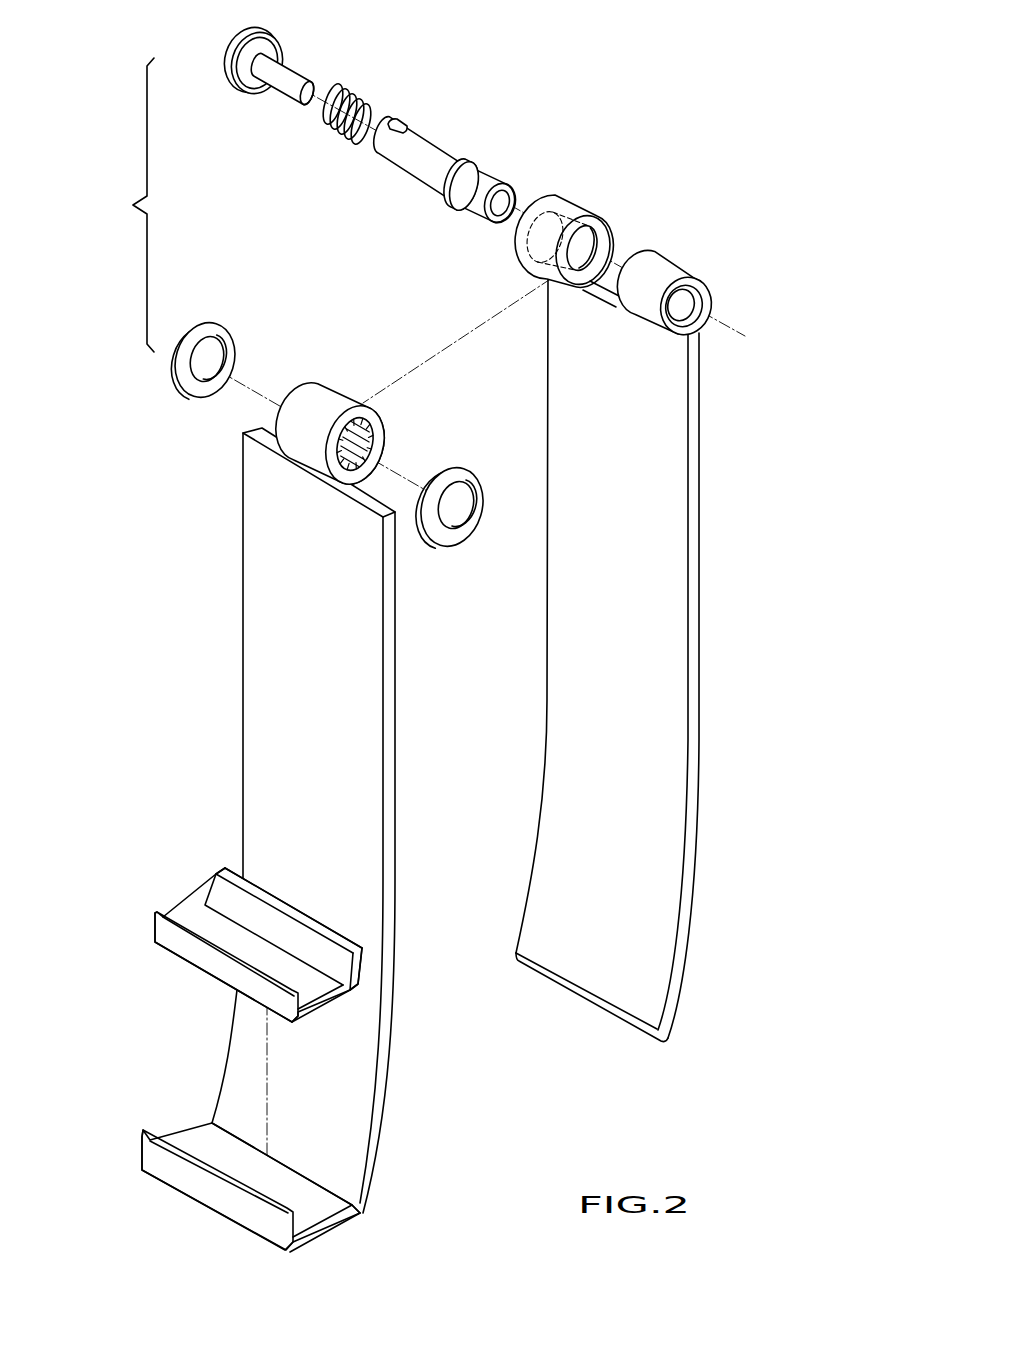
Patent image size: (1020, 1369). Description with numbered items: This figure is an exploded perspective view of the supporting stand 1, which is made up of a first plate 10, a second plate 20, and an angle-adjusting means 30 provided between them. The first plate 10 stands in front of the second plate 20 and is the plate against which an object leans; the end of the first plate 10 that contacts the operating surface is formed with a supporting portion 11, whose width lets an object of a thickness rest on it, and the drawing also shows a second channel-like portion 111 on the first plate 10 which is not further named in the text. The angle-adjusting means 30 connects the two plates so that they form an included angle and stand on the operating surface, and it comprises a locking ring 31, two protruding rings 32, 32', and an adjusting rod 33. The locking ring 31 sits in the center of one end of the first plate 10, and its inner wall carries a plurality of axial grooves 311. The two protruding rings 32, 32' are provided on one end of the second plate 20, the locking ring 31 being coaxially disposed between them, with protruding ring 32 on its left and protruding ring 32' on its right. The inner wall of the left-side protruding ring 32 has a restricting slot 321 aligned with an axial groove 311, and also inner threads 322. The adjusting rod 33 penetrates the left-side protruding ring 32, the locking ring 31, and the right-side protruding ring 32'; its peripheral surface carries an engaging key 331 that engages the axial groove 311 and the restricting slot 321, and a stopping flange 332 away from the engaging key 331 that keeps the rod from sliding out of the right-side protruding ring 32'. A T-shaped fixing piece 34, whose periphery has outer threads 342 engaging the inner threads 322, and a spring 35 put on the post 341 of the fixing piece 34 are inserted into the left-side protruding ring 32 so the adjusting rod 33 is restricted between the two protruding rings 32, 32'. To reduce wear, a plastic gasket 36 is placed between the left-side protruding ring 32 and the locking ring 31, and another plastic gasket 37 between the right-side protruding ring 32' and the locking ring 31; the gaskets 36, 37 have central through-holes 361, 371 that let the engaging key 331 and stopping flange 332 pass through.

The supporting stand 1 is at (728, 138).
The first plate 10 is at (275, 647).
The supporting portion 11 is at (202, 1142).
The upper channel 111 is at (202, 922).
The second plate 20 is at (660, 695).
The angle-adjusting means 30 is at (125, 205).
The locking ring 31 is at (334, 397).
The axial grooves 311 is at (378, 437).
The protruding ring 32 is at (568, 222).
The restricting slot 321 is at (584, 232).
The inner threads 322 is at (517, 240).
The protruding ring 32' is at (678, 266).
The adjusting rod 33 is at (436, 150).
The engaging key 331 is at (403, 120).
The stopping flange 332 is at (477, 170).
The T-shaped fixing piece 34 is at (244, 48).
The post 341 is at (293, 90).
The outer threads 342 is at (232, 84).
The spring 35 is at (330, 130).
The plastic gasket 36 is at (230, 338).
The central through-hole 361 is at (220, 357).
The plastic gasket 37 is at (472, 483).
The central through-hole 371 is at (462, 523).